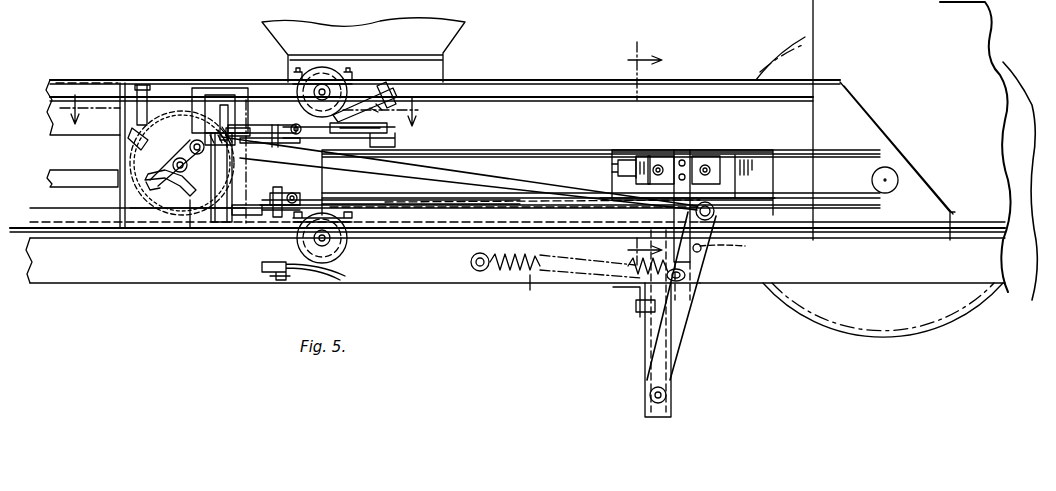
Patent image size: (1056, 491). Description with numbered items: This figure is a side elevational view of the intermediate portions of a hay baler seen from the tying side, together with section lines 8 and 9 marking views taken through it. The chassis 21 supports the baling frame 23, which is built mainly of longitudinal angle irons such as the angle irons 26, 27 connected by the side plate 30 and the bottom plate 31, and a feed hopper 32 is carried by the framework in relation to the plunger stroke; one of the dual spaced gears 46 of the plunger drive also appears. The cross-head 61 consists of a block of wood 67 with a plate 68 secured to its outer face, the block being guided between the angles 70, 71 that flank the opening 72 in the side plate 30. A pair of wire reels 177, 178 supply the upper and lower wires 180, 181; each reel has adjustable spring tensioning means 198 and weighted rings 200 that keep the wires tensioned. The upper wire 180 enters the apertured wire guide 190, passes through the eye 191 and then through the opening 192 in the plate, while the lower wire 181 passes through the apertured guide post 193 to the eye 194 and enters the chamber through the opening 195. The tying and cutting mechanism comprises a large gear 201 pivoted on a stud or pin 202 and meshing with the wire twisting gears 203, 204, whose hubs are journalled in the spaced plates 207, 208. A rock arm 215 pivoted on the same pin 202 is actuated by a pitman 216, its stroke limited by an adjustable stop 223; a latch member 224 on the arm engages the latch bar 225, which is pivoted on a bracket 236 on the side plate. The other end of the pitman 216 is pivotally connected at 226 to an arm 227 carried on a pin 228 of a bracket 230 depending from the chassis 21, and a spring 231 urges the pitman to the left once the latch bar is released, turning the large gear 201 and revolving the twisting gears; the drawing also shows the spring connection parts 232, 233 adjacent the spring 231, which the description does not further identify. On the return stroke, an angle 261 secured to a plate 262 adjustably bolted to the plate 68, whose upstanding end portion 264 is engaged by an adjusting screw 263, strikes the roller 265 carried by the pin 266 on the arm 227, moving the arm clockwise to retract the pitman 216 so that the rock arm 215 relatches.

The section line 8- 8 is at (238, 110).
The section line 9- 9 is at (636, 153).
The chassis 21 is at (432, 282).
The baling frame 23 is at (563, 80).
The longitudinal angle iron 26 is at (793, 212).
The longitudinal angle iron 27 is at (697, 86).
The side plate 30 is at (568, 123).
The bottom plate 31 is at (424, 232).
The feed hopper 32 is at (450, 42).
The dual spaced gear 46 is at (860, 335).
The cross-head 61 is at (728, 148).
The block of wood 67 is at (772, 180).
The plate 68 is at (692, 150).
The angle 70 is at (502, 146).
The angle 71 is at (466, 208).
The opening 72 is at (520, 160).
The wire reel 177 is at (322, 68).
The wire reel 178 is at (336, 262).
The upper wire 180 is at (303, 82).
The lower wire 181 is at (322, 200).
The apertured wire guide 190 is at (234, 100).
The eye 191 is at (292, 134).
The opening 192 is at (277, 126).
The apertured guide post 193 is at (291, 206).
The eye 194 is at (232, 216).
The opening 195 is at (272, 195).
The adjustable spring tensioning means 198 is at (390, 80).
The weighted ring 200 is at (294, 194).
The large gear 201 is at (162, 212).
The stud or pin 202 is at (128, 172).
The wire twisting gear 203 is at (222, 105).
The wire twisting gear 204 is at (188, 236).
The plate 207 is at (232, 96).
The plate 208 is at (202, 88).
The rock arm 215 is at (143, 188).
The pitman 216 is at (446, 162).
The adjustable stop 223 is at (135, 138).
The latch member 224 is at (157, 116).
The latch bar 225 is at (224, 133).
The pivotal connection 226 is at (694, 212).
The arm 227 is at (684, 326).
The pin 228 is at (668, 394).
The bracket 230 is at (647, 332).
The spring 231 is at (537, 290).
The spring clip 232 is at (690, 288).
The spring 233 is at (484, 272).
The bracket 236 is at (396, 137).
The angle 261 is at (684, 258).
The plate 262 is at (660, 156).
The adjusting screw 263 is at (634, 158).
The upstanding end portion 264 is at (646, 154).
The roller 265 is at (760, 252).
The pin 266 is at (735, 247).